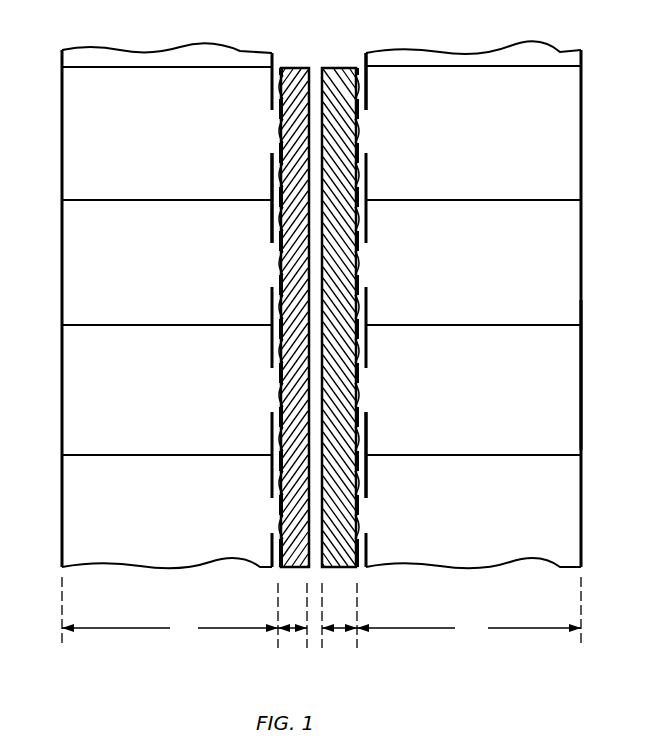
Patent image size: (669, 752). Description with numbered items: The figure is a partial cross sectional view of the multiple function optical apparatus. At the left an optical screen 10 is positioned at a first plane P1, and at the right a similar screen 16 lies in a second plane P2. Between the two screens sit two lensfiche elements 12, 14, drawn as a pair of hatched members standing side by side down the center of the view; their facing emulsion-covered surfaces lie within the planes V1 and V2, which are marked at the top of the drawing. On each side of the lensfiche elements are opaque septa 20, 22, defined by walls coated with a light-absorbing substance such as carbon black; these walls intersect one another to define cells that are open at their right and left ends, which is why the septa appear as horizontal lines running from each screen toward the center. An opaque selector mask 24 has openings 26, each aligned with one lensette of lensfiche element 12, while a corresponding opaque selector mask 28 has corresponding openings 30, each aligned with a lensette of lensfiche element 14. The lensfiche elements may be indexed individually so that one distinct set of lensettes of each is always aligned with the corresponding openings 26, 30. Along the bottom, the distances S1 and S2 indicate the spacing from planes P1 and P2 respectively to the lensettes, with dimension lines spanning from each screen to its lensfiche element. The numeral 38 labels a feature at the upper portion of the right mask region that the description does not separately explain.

The optical screen 10 is at (62, 318).
The lensfiche element 12 is at (297, 568).
The lensfiche element 14 is at (334, 568).
The screen 16 is at (581, 376).
The opaque septa 20 is at (178, 202).
The opaque septa 22 is at (423, 200).
The opaque selector mask 24 is at (272, 222).
The openings 26 is at (279, 262).
The opaque selector mask 28 is at (367, 428).
The openings 30 is at (368, 133).
The upper inner edge segment of second panel 38 is at (367, 90).
The first plane P1 is at (62, 215).
The second plane P2 is at (581, 90).
The plane of emulsion-covered surface V1 is at (308, 62).
The plane of emulsion-covered surface V2 is at (321, 62).
The distance S1 is at (292, 634).
The distance S2 is at (340, 634).